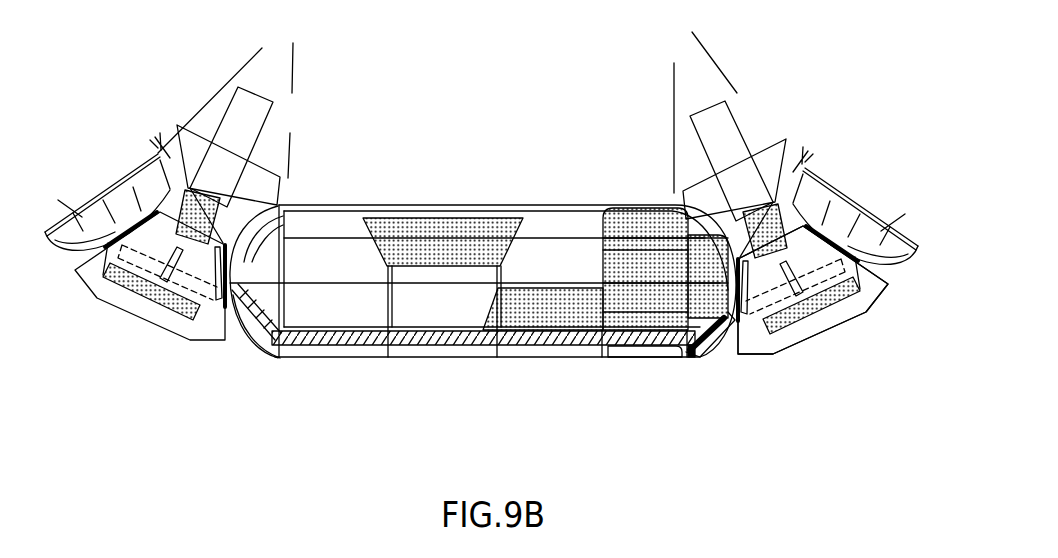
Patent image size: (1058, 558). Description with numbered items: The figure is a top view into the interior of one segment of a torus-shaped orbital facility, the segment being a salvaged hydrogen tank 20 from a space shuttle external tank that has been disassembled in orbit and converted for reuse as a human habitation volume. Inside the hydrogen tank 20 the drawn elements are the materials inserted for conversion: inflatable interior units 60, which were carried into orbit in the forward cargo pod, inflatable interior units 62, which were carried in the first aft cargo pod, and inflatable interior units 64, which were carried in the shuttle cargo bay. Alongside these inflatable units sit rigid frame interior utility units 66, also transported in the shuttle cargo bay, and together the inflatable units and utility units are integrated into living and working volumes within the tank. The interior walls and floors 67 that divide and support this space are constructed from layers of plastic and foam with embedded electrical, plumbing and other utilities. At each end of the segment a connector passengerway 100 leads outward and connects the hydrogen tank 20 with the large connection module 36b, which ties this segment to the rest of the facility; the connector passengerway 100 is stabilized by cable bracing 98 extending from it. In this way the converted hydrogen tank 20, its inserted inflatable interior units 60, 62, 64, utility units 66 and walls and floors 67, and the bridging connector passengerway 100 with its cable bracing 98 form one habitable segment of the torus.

The hydrogen tank 20 is at (542, 207).
The inflatable interior units 64 is at (426, 220).
The interior walls and floors 67 is at (642, 240).
The rigid frame interior utility units 66 is at (332, 338).
The inflatable interior units 60 is at (733, 361).
The inflatable interior units 62 is at (710, 334).
The cable bracing 98 is at (213, 97).
The connector passengerway 100 is at (255, 122).
The large connection module 36b is at (830, 315).